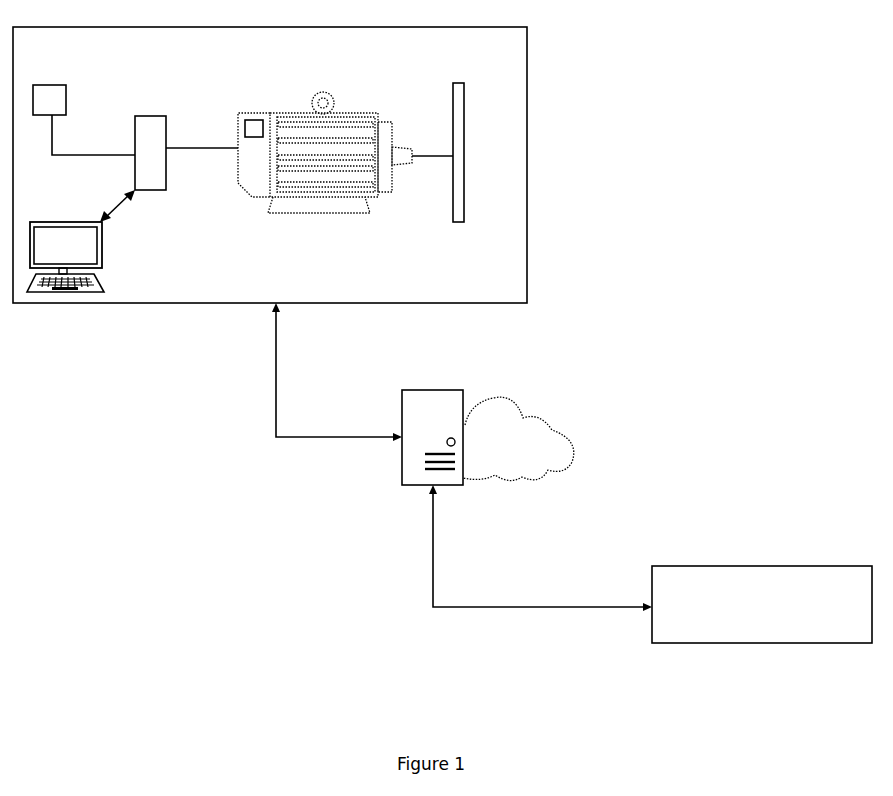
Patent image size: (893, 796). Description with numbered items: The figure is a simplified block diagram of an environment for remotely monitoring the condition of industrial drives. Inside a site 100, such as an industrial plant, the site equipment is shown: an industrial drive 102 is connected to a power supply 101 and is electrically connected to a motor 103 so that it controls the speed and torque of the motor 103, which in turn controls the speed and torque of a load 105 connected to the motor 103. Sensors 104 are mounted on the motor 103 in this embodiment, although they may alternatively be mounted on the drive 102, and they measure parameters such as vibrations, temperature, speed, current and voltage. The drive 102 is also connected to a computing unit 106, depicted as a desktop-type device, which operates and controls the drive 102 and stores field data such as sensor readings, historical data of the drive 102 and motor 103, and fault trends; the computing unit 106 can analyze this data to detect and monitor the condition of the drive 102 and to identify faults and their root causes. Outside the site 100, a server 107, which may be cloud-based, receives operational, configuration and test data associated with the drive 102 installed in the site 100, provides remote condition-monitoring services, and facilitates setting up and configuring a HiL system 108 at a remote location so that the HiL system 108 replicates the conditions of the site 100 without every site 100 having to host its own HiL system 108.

The site 100 is at (270, 165).
The power supply 101 is at (60, 95).
The industrial drive 102 is at (166, 116).
The motor 103 is at (363, 113).
The sensors 104 is at (250, 120).
The load 105 is at (464, 83).
The computing unit 106 is at (97, 250).
The server 107 is at (457, 390).
The HiL system 108 is at (762, 604).